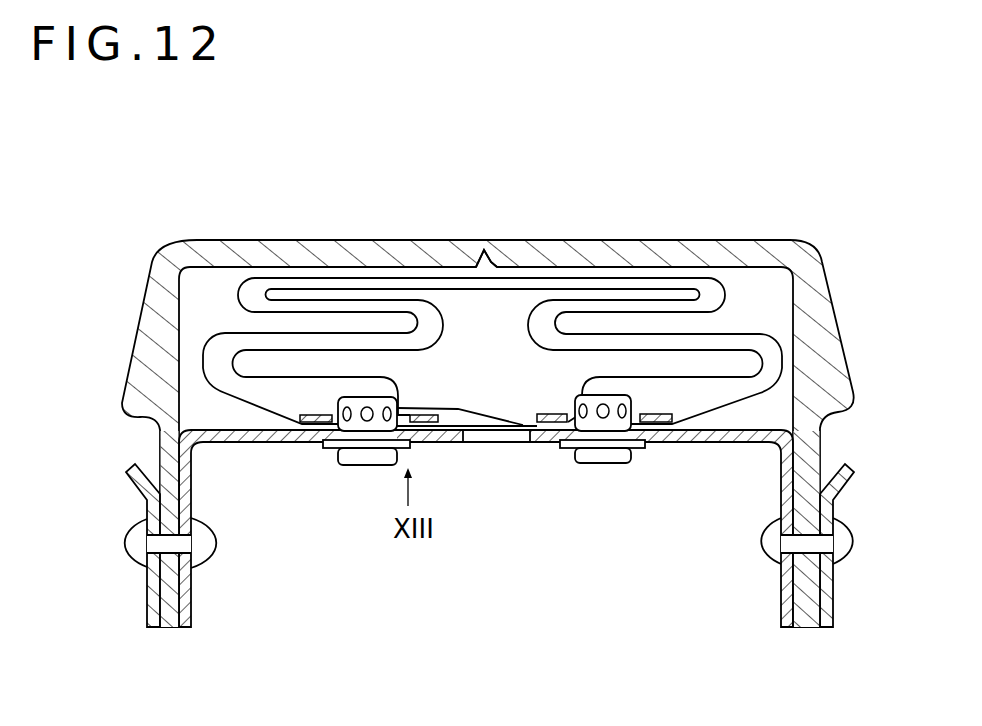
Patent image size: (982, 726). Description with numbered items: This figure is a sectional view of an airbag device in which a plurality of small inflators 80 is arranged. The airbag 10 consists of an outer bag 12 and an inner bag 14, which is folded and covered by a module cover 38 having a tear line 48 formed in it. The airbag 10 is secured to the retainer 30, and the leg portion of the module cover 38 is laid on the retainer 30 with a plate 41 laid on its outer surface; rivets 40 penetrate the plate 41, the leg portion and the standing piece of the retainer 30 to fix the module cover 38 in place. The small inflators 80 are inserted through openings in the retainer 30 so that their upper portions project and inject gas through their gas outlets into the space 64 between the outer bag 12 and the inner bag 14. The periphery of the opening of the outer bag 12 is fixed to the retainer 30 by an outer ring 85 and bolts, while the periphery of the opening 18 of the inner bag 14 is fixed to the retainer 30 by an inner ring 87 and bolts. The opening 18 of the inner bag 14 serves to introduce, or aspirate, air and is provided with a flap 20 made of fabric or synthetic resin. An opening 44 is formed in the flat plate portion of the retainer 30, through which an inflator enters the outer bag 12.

The airbag 10 is at (703, 266).
The outer bag 12 is at (402, 278).
The inner bag 14 is at (462, 298).
The tear line 48 is at (497, 270).
The module cover 38 is at (637, 242).
The space 64 is at (290, 407).
The flap 20 is at (475, 412).
The inner ring 87 is at (543, 412).
The opening 18 is at (452, 427).
The opening 44 is at (507, 440).
The small inflators 80 is at (352, 467).
The outer ring 85 is at (668, 443).
The retainer 30 is at (690, 440).
The rivets 40 is at (216, 563).
The plate 41 is at (143, 606).